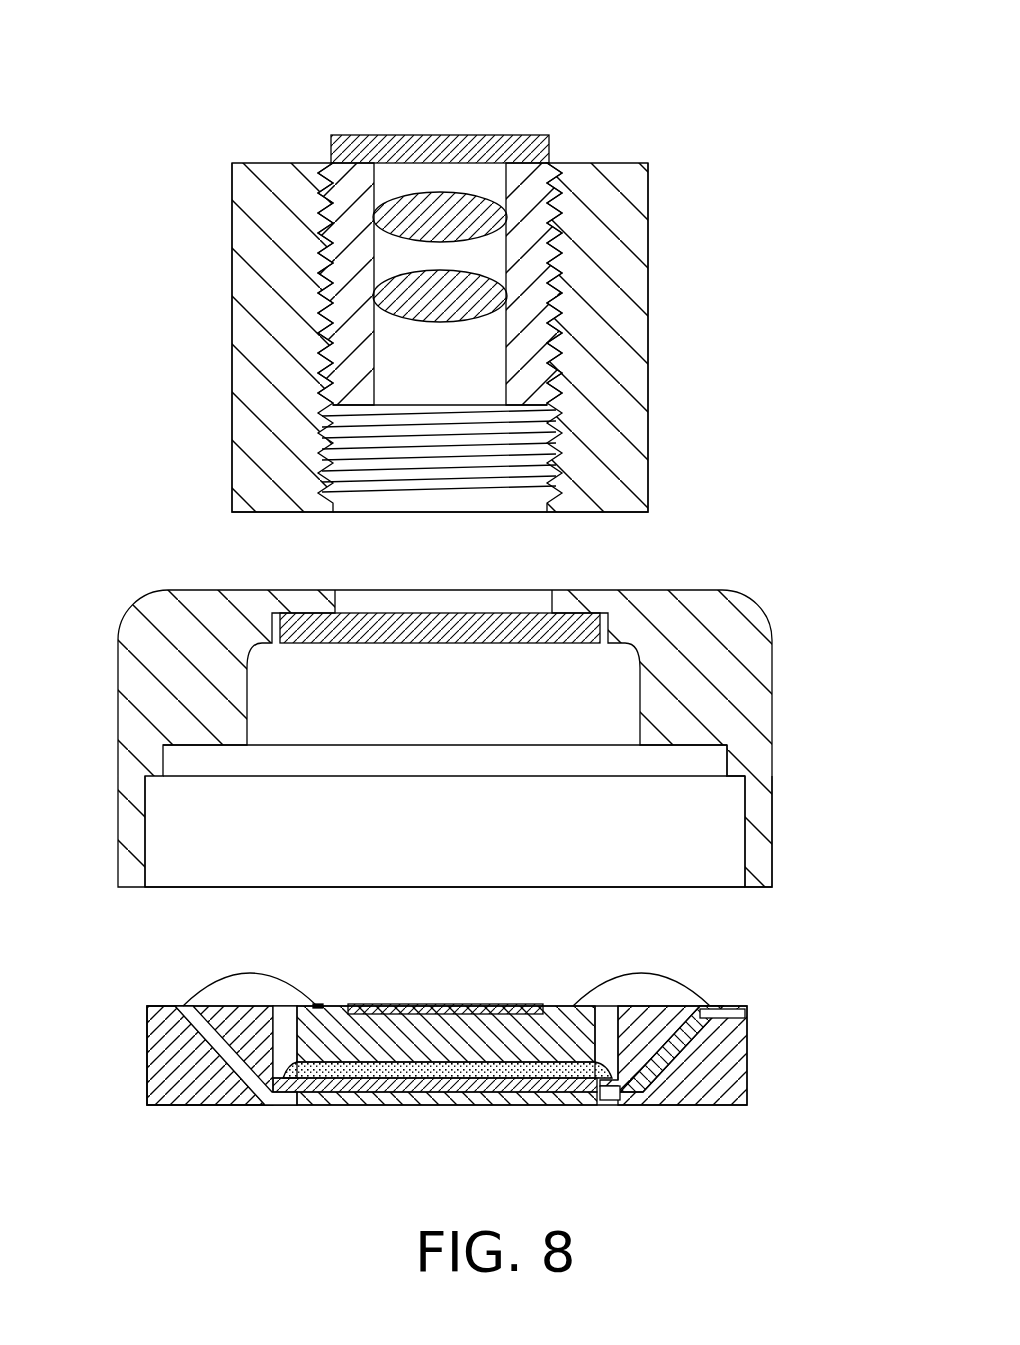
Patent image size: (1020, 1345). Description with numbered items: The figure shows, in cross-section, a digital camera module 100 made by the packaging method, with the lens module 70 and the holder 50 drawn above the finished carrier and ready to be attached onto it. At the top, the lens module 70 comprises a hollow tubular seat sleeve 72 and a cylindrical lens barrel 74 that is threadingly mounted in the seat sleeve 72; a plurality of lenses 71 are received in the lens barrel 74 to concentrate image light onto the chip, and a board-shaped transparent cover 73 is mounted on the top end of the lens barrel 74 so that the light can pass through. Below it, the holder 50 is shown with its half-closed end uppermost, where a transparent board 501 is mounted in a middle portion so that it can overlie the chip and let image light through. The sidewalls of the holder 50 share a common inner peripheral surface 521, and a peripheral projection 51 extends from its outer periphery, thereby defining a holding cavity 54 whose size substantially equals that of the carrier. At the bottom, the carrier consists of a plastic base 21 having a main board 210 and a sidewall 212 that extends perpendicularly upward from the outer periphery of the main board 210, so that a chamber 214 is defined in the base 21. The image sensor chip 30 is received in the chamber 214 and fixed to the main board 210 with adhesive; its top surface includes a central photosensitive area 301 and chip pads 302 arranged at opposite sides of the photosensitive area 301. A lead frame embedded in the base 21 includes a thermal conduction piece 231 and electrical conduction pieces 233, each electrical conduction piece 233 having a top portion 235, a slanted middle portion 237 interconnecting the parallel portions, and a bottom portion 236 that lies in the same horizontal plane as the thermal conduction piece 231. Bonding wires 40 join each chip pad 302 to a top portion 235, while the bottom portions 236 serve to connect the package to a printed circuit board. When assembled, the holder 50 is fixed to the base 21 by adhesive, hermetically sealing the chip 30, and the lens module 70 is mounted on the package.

The digital camera module 100 is at (480, 37).
The lens module 70 is at (662, 177).
The lenses 71 is at (447, 210).
The seat sleeve 72 is at (612, 358).
The cover 73 is at (517, 141).
The lens barrel 74 is at (537, 217).
The holder 50 is at (740, 603).
The transparent board 501 is at (280, 628).
The inner peripheral surface 521 is at (733, 778).
The peripheral projection 51 is at (755, 860).
The holding cavity 54 is at (676, 858).
The base 21 is at (325, 1183).
The sidewall 212 is at (190, 1045).
The main board 210 is at (318, 1097).
The chamber 214 is at (288, 1040).
The image sensor chip 30 is at (405, 1045).
The photosensitive area 301 is at (441, 1004).
The chip pads 302 is at (319, 1004).
The thermal conduction piece 231 is at (495, 1097).
The bonding wires 40 is at (250, 990).
The electrical conduction pieces 233 is at (850, 970).
The top portion 235 is at (740, 1010).
The middle portion 237 is at (700, 1036).
The bottom portion 236 is at (612, 1097).